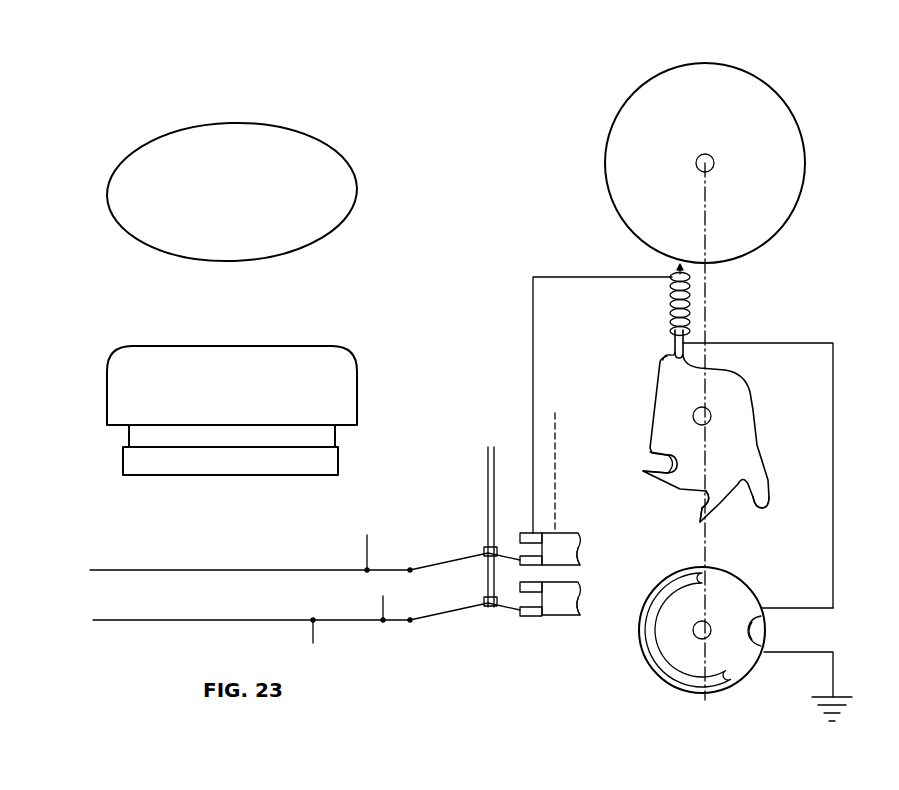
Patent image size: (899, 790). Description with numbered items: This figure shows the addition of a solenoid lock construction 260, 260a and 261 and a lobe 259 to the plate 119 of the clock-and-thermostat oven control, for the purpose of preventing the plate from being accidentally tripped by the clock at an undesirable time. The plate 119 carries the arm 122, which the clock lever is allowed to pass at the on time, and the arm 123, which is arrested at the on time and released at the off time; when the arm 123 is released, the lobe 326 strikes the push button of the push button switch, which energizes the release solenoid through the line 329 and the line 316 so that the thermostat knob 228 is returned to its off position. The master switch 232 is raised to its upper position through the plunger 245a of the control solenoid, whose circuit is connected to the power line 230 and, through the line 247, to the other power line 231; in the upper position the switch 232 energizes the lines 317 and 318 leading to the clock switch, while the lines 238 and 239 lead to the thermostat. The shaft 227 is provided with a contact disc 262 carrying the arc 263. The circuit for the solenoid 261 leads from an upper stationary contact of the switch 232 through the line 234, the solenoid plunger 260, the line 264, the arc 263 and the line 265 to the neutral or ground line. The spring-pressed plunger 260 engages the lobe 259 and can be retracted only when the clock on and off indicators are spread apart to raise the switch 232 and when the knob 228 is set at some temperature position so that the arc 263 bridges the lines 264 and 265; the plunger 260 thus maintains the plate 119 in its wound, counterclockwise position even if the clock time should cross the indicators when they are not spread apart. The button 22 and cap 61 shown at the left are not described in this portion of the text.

The push button 22 is at (328, 157).
The cap 61 is at (347, 383).
The thermostat knob 228 is at (792, 130).
The solenoid lock construction part 260a is at (674, 267).
The solenoid 261 is at (670, 303).
The solenoid plunger 260 is at (676, 341).
The lobe 259 is at (664, 357).
The line 234 is at (560, 277).
The plate 119 is at (735, 388).
The arm 122 is at (645, 470).
The lobe 326 is at (760, 493).
The arm 123 is at (700, 513).
The line 329 is at (557, 437).
The plunger 245a is at (488, 480).
The line 317 is at (567, 528).
The line 238 is at (568, 562).
The line 318 is at (567, 578).
The line 239 is at (557, 617).
The power line 231 is at (113, 570).
The line 247 is at (367, 548).
The power line 230 is at (160, 618).
The line 316 is at (313, 635).
The master switch 232 is at (457, 601).
The shaft 227 is at (698, 698).
The arc 263 is at (653, 633).
The contact disc 262 is at (737, 665).
The line 264 is at (807, 597).
The line 265 is at (793, 653).